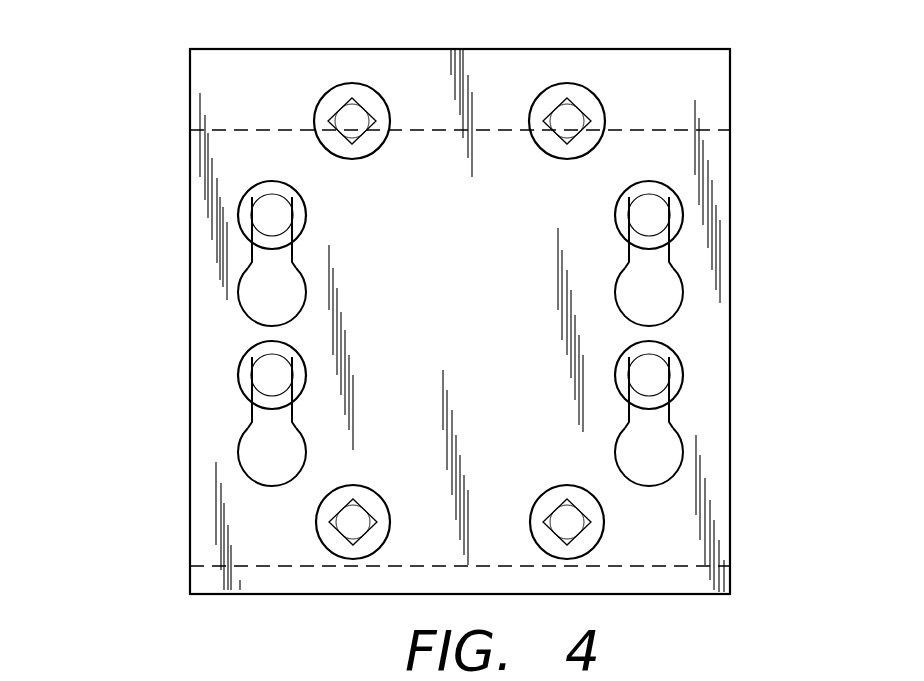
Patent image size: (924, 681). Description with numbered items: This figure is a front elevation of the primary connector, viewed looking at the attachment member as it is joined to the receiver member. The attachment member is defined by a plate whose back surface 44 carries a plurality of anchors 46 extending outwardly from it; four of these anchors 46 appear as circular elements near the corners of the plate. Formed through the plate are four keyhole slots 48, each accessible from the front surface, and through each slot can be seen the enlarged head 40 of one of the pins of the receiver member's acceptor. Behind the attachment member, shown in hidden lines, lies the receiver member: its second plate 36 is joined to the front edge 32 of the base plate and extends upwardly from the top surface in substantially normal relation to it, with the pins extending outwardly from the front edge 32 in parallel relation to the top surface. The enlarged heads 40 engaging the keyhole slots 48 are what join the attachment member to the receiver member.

The front edge 32 is at (674, 566).
The second plate 36 is at (257, 130).
The enlarged head 40 is at (238, 213).
The back surface 44 is at (210, 405).
The anchors 46 is at (330, 105).
The keyhole slots 48 is at (238, 284).